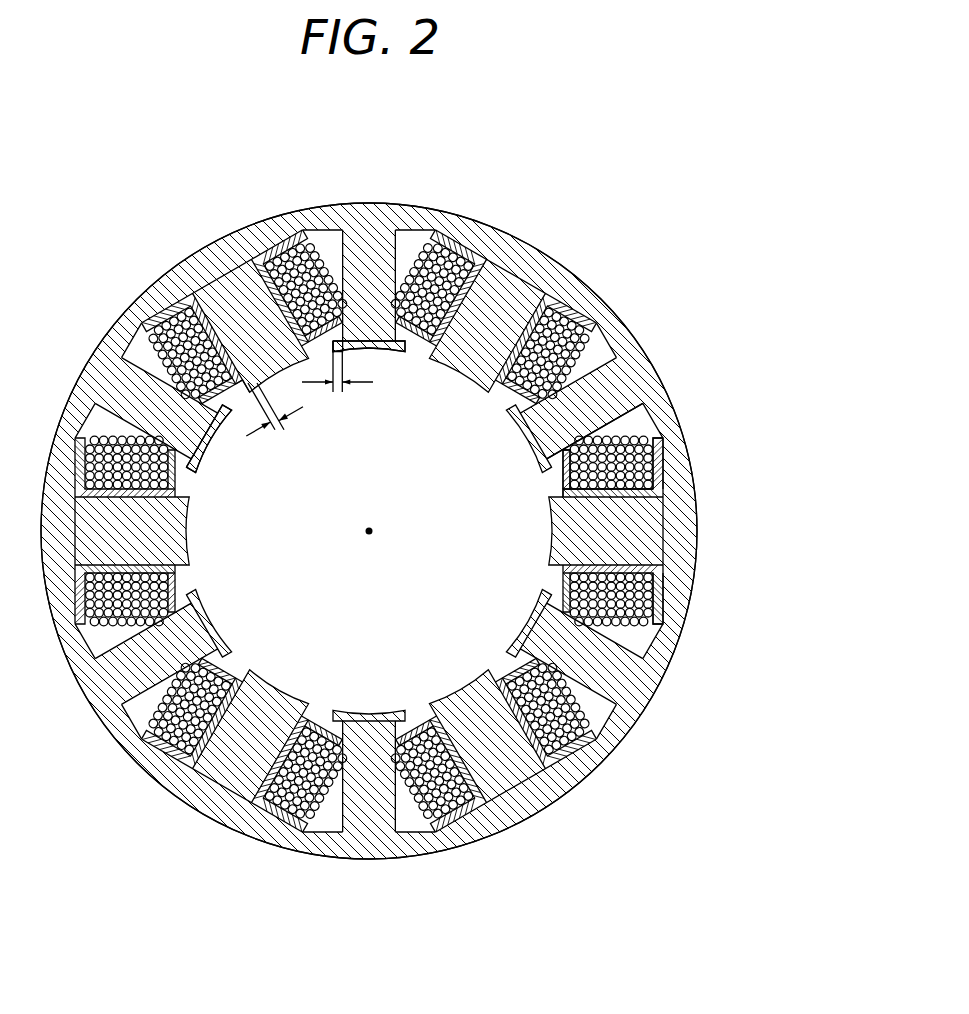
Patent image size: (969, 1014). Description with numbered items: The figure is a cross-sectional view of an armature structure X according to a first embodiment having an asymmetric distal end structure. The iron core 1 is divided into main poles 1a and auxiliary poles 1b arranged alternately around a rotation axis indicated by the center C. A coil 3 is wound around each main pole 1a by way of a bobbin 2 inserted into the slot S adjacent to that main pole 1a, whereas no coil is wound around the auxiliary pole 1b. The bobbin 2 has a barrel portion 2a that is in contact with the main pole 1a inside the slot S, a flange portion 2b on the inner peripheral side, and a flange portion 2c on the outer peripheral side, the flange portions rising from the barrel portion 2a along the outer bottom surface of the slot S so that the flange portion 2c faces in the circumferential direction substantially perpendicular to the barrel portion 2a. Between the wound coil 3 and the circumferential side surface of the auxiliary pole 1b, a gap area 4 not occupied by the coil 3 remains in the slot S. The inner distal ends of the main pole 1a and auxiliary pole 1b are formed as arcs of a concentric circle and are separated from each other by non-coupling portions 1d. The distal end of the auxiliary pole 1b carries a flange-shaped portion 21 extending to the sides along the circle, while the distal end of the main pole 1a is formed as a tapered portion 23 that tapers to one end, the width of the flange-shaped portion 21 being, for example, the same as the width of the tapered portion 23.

The iron core 1 is at (512, 258).
The main pole 1a is at (617, 532).
The auxiliary pole 1b is at (600, 403).
The non-coupling portion 1d is at (185, 484).
The bobbin 2 is at (677, 455).
The barrel portion 2a is at (603, 500).
The flange portion on the inner peripheral side 2b is at (562, 483).
The flange portion on the outer peripheral side 2c is at (668, 480).
The coil 3 is at (663, 593).
The gap area 4 is at (635, 427).
The flange-shaped portion 21 is at (337, 352).
The tapered portion 23 is at (248, 387).
The slot S is at (570, 731).
The center axis C is at (366, 531).
The armature structure X is at (650, 290).